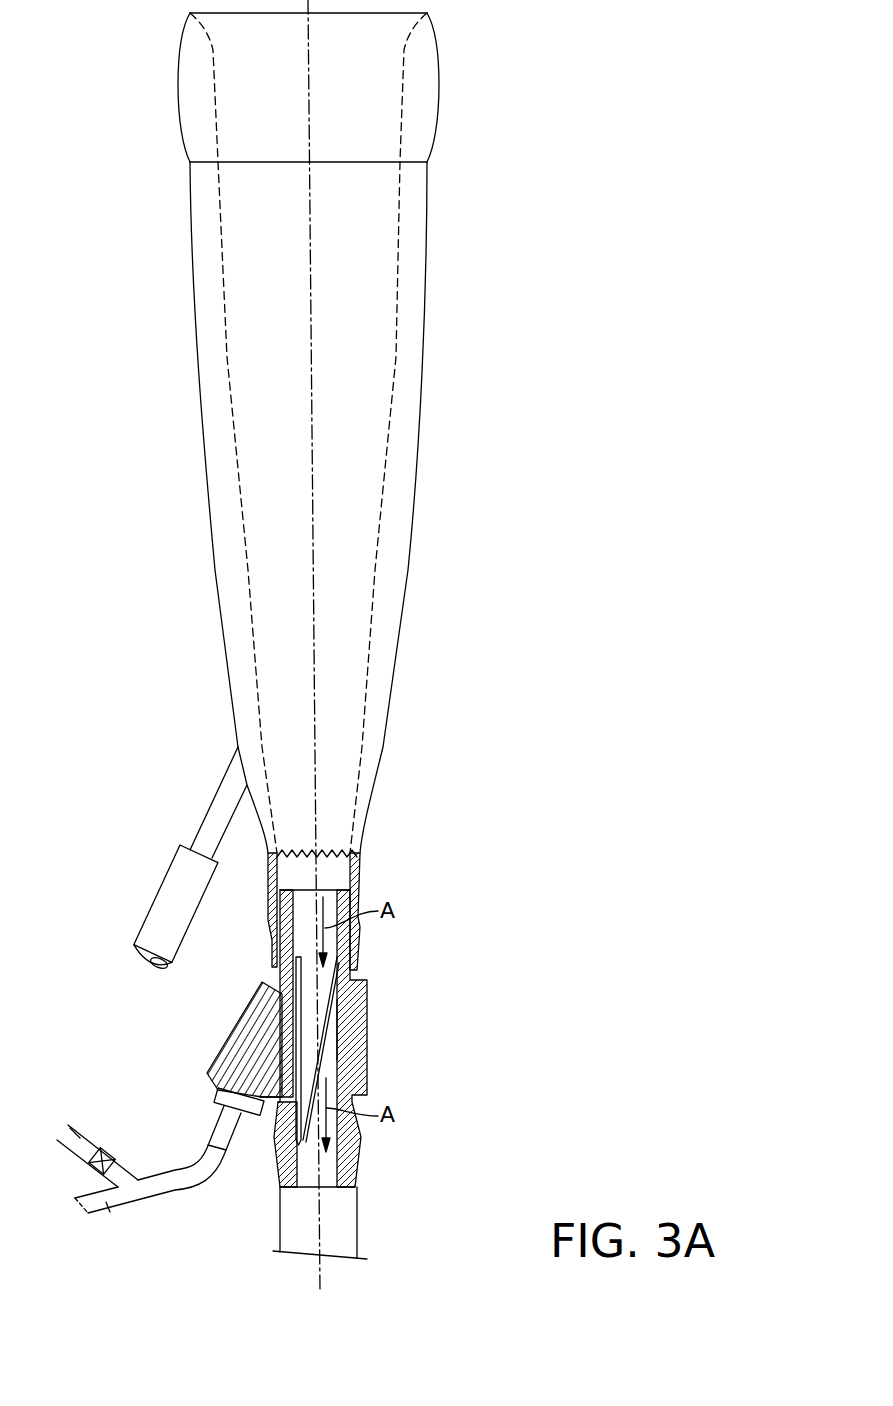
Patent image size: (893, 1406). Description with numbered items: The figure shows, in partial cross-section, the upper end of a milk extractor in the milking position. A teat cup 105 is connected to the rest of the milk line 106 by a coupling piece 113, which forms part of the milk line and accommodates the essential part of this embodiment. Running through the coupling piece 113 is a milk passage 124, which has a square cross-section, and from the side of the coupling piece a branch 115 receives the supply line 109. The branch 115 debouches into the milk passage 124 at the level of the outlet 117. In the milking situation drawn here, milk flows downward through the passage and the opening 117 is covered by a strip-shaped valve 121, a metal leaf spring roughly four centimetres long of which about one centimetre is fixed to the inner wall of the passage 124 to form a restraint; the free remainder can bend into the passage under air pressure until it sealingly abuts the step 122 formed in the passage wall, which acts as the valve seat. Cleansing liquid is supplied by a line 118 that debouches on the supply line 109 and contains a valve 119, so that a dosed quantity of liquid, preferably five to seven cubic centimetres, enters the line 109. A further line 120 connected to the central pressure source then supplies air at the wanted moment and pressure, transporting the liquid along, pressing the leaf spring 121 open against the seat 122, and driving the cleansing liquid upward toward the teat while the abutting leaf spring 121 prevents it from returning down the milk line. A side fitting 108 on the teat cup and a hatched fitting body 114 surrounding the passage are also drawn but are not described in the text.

The teat cup 105 is at (403, 618).
The milk line 106 is at (355, 1230).
The inlet port fitting 108 is at (162, 900).
The supply line 109 is at (195, 1165).
The coupling piece 113 is at (483, 958).
The fitting body 114 is at (366, 1075).
The branch 115 is at (252, 1073).
The outlet 117 is at (293, 1020).
The line 118 is at (78, 1133).
The valve 119 is at (107, 1158).
The line 120 is at (108, 1207).
The strip-shaped valve 121 is at (290, 997).
The step 122 is at (325, 983).
The milk passage 124 is at (350, 1030).